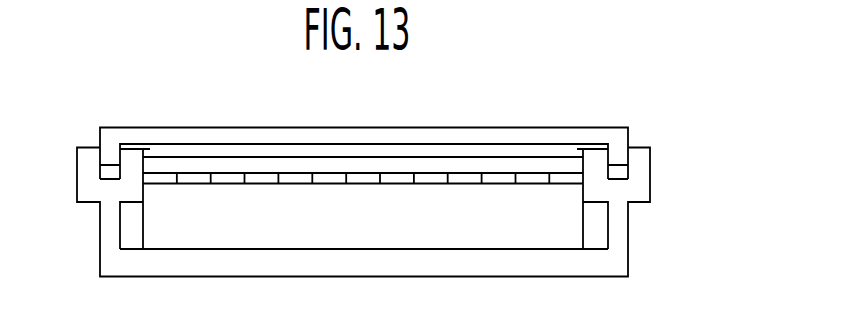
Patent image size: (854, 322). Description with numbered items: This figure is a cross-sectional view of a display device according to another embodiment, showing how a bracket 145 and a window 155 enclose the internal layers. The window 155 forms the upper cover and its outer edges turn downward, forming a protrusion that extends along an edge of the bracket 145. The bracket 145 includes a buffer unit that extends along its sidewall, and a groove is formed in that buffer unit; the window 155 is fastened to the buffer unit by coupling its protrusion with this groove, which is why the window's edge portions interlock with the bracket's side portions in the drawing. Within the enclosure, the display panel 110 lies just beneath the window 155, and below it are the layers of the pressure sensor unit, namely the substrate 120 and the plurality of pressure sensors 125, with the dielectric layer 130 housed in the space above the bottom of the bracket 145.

The display panel 110 is at (583, 150).
The substrate 120 is at (540, 178).
The pressure sensors 125 is at (573, 167).
The dielectric layer 130 is at (568, 237).
The bracket 145 is at (102, 259).
The window 155 is at (618, 134).